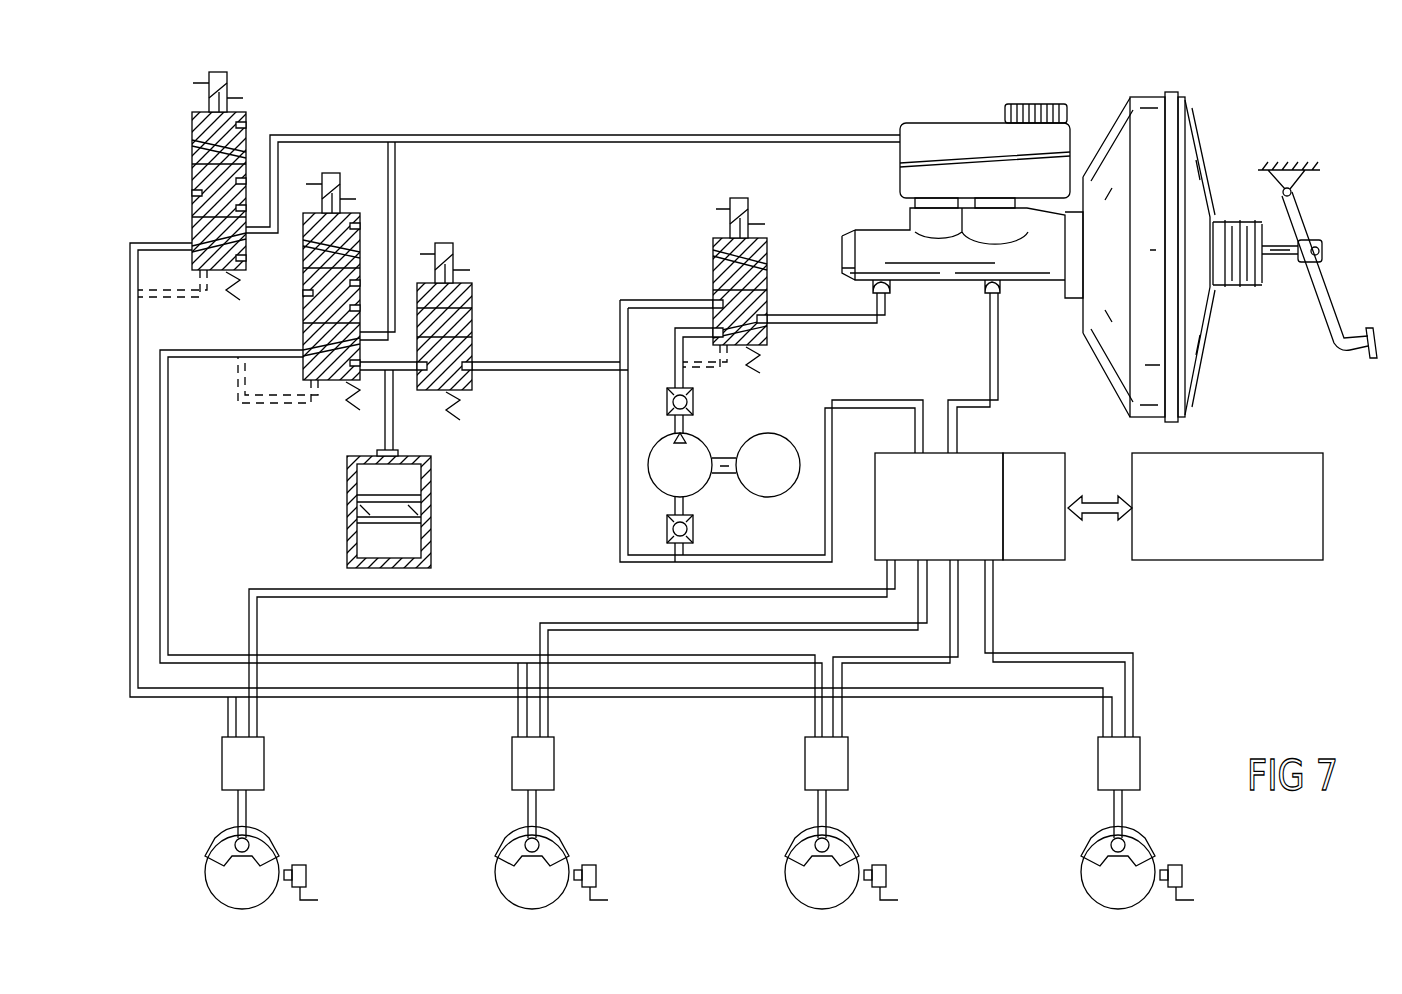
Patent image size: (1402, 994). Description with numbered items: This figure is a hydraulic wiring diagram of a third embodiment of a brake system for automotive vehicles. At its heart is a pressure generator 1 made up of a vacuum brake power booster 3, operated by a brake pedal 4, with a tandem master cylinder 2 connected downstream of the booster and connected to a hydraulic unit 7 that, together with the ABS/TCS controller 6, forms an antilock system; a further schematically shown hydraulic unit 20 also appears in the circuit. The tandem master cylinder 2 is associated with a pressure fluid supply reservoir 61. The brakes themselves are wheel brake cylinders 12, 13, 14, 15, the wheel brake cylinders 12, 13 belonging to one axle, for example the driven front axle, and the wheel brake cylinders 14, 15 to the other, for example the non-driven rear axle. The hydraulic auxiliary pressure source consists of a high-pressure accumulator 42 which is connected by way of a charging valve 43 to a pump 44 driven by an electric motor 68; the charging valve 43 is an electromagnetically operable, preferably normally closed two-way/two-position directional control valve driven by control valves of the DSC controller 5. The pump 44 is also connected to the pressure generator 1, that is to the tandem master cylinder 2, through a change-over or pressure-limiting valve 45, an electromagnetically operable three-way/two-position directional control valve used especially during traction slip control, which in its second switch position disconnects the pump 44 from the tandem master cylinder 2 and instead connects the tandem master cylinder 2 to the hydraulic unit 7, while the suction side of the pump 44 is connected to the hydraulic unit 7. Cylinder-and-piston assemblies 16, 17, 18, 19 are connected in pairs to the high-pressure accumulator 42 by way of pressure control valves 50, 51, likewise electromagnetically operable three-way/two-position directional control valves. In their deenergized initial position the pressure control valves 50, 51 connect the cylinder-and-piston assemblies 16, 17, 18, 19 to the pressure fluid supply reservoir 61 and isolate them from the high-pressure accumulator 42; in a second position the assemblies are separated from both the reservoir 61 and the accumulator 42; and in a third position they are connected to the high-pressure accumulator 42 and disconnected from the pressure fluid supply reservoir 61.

The pressure generator 1 is at (1212, 116).
The tandem master cylinder 2 is at (862, 238).
The vacuum brake power booster 3 is at (1205, 323).
The brake pedal 4 is at (1342, 312).
The DSC controller 5 is at (1256, 468).
The ABS/TCS controller 6 is at (1030, 468).
The hydraulic unit 7 is at (895, 464).
The wheel brake cylinder 12 is at (252, 846).
The wheel brake cylinder 13 is at (542, 846).
The wheel brake cylinder 14 is at (832, 846).
The wheel brake cylinder 15 is at (1128, 846).
The cylinder-and-piston assembly 16 is at (230, 764).
The cylinder-and-piston assembly 17 is at (520, 764).
The cylinder-and-piston assembly 18 is at (813, 764).
The cylinder-and-piston assembly 19 is at (1098, 764).
The hydraulic unit 20 is at (336, 476).
The high-pressure accumulator 42 is at (432, 533).
The charging valve 43 is at (470, 338).
The pump 44 is at (693, 498).
The change-over or pressure-limiting valve 45 is at (716, 266).
The pressure control valve 50 is at (194, 148).
The pressure control valve 51 is at (350, 232).
The pressure fluid supply reservoir 61 is at (942, 140).
The electric motor 68 is at (770, 497).